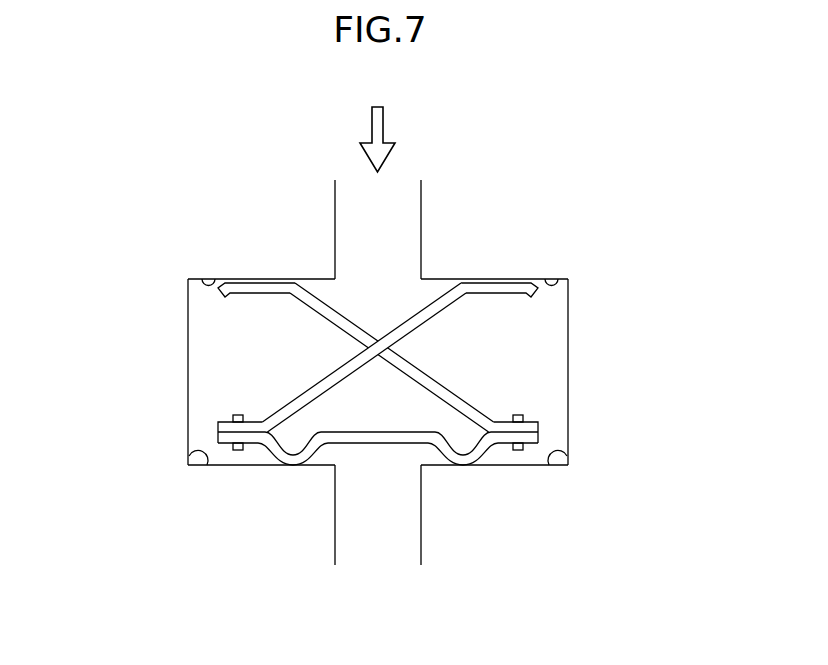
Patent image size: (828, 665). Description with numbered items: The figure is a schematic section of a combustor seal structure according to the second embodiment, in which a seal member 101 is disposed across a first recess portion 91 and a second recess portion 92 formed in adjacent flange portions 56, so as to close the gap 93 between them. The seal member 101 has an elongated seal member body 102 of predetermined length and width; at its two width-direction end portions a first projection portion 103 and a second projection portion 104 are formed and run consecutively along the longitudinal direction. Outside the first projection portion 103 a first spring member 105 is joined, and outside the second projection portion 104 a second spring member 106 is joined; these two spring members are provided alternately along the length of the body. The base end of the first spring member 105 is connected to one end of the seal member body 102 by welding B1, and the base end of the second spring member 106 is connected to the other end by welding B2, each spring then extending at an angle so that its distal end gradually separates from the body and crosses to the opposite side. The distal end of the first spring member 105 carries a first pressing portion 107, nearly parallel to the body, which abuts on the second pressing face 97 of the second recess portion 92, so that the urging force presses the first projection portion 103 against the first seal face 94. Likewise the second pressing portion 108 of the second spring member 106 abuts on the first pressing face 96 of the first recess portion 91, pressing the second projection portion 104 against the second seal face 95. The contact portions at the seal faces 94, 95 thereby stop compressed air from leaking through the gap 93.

The flange portion 56 is at (92, 202).
The first recess portion 91 is at (197, 340).
The second recess portion 92 is at (559, 340).
The gap 93 is at (405, 193).
The first seal face 94 is at (195, 459).
The second seal face 95 is at (563, 459).
The first pressing face 96 is at (206, 279).
The second pressing face 97 is at (554, 279).
The seal member 101 is at (350, 306).
The seal member body 102 is at (389, 447).
The first projection portion 103 is at (292, 457).
The second projection portion 104 is at (463, 457).
The first spring member 105 is at (433, 303).
The second spring member 106 is at (440, 376).
The first pressing portion 107 is at (488, 288).
The second pressing portion 108 is at (262, 284).
The welding B1 is at (234, 414).
The welding B2 is at (522, 414).